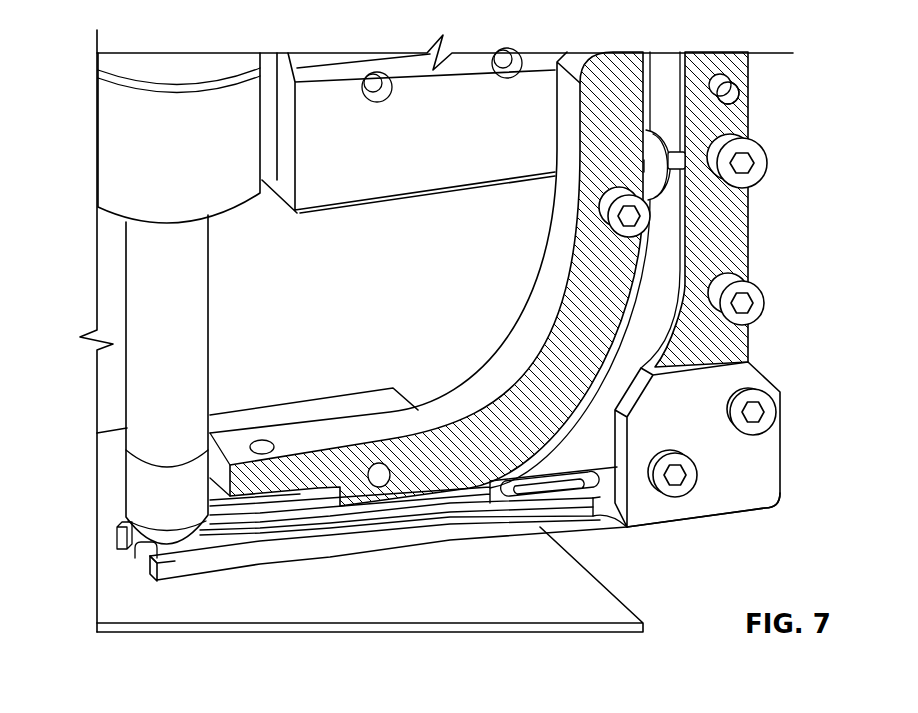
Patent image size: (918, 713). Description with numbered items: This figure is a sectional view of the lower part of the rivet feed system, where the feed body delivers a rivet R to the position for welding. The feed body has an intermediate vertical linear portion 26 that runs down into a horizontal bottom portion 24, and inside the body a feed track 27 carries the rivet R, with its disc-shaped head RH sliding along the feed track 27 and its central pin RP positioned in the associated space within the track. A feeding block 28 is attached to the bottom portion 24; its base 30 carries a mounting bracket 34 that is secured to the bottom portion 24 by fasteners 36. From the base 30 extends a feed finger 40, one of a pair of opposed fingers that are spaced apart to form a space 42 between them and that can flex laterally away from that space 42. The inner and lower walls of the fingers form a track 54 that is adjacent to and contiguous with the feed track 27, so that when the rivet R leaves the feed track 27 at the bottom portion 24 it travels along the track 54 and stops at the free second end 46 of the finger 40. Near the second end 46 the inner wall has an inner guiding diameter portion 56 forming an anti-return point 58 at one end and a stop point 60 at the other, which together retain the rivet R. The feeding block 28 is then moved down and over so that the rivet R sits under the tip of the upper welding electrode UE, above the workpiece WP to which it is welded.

The horizontal bottom portion 24 is at (290, 440).
The intermediate vertical linear portion 26 is at (737, 110).
The feed track 27 is at (667, 223).
The feeding block 28 is at (767, 455).
The base 30 is at (615, 513).
The mounting bracket 34 is at (763, 495).
The fasteners 36 is at (775, 410).
The feed finger 40 is at (268, 555).
The space 42 is at (117, 535).
The second end 46 is at (180, 558).
The track 54 is at (238, 548).
The inner guiding diameter portion 56 is at (185, 558).
The anti-return point 58 is at (200, 557).
The stop point 60 is at (172, 556).
The upper welding electrode UE is at (143, 410).
The disc-shaped head RH is at (652, 130).
The rivet R is at (153, 562).
The central pin RP is at (686, 162).
The workpiece WP is at (541, 613).